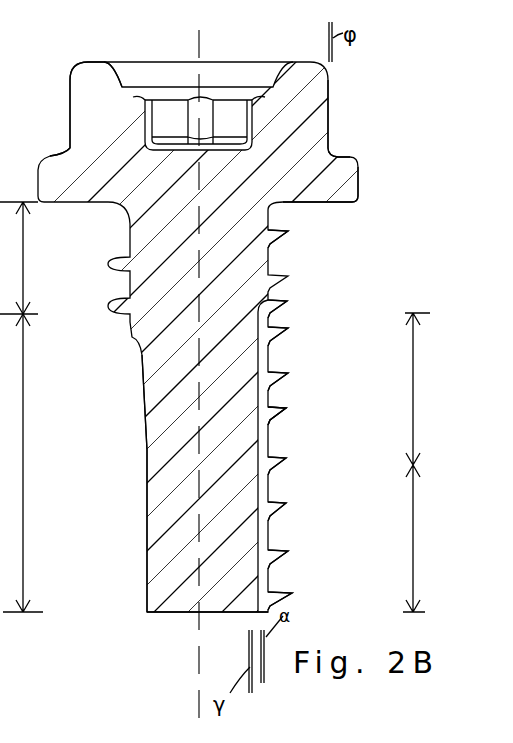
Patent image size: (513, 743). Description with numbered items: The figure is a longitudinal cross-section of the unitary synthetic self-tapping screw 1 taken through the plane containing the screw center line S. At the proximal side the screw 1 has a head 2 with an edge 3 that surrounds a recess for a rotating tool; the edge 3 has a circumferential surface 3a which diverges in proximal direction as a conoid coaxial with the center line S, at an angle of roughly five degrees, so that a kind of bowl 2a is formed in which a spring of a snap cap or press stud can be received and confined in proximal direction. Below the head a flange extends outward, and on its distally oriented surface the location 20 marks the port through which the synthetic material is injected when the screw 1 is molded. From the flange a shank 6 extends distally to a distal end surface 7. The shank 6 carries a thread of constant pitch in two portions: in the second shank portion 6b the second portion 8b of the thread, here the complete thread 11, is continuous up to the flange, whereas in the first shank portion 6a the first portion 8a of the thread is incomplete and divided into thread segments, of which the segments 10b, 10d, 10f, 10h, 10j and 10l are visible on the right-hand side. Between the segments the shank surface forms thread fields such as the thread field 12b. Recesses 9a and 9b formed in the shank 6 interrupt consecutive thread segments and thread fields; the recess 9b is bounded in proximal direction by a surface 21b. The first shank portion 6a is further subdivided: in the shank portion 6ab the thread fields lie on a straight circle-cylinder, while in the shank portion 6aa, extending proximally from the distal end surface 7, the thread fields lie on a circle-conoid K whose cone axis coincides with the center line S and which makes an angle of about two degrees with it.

The screw 1 is at (345, 108).
The head 2 is at (88, 107).
The bowl 2a is at (336, 152).
The edge 3 is at (310, 141).
The circumferential surface 3a is at (72, 148).
The shank 6 is at (203, 325).
The first shank portion 6a is at (23, 523).
The shank portion 6aa is at (413, 565).
The shank portion 6ab is at (413, 380).
The second shank portion 6b is at (23, 297).
The distal end surface 7 is at (162, 610).
The first portion 8a is at (23, 470).
The second portion 8b is at (23, 258).
The recess 9a is at (145, 564).
The recess 9b is at (270, 407).
The thread segment 10b is at (288, 553).
The thread segment 10d is at (286, 505).
The thread segment 10f is at (286, 460).
The thread segment 10h is at (286, 410).
The thread segment 10j is at (288, 374).
The thread segment 10l is at (288, 329).
The thread 11 is at (288, 232).
The thread field 12b is at (293, 594).
The location of injection port 20 is at (328, 203).
The surface 21b is at (287, 302).
The screw center line S is at (199, 702).
The circle-conoid K is at (266, 638).